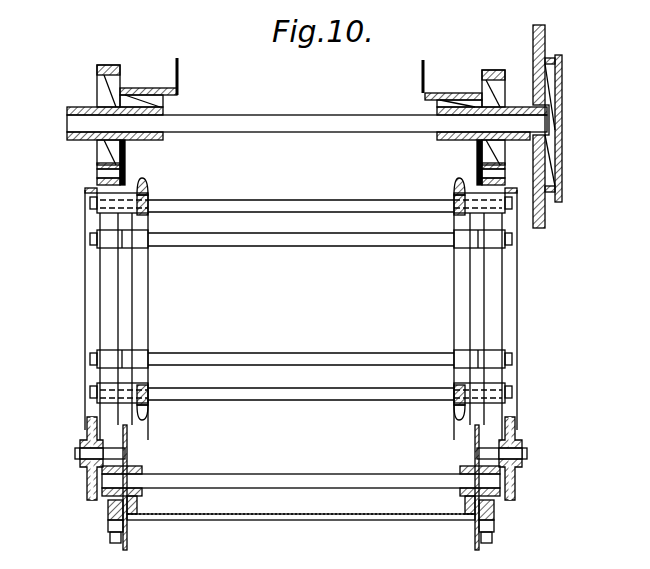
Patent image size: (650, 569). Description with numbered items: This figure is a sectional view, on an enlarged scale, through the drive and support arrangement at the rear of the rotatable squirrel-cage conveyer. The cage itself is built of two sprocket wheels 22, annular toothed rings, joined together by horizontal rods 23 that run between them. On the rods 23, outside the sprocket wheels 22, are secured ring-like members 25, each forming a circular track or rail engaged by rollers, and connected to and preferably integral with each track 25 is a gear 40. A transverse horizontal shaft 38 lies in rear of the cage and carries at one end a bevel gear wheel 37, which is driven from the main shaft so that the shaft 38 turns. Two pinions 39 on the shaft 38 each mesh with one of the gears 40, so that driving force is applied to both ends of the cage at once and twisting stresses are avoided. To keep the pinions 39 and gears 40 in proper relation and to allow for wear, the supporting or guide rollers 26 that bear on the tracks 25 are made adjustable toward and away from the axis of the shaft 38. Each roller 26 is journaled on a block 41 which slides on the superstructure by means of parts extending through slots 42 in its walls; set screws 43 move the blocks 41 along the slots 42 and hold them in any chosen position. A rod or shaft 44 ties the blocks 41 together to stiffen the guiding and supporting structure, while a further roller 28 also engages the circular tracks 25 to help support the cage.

The sprocket wheels 22 is at (140, 316).
The horizontal rods 23 is at (252, 240).
The ring-like members 25 is at (88, 278).
The rollers 26 is at (85, 435).
The roller 28 is at (215, 521).
The bevel gear wheel 37 is at (549, 210).
The transverse horizontal shaft 38 is at (367, 117).
The pinions 39 is at (112, 78).
The gear 40 is at (100, 174).
The blocks 41 is at (460, 492).
The slots 42 is at (128, 460).
The set screws 43 is at (108, 530).
The rod or shaft 44 is at (272, 482).